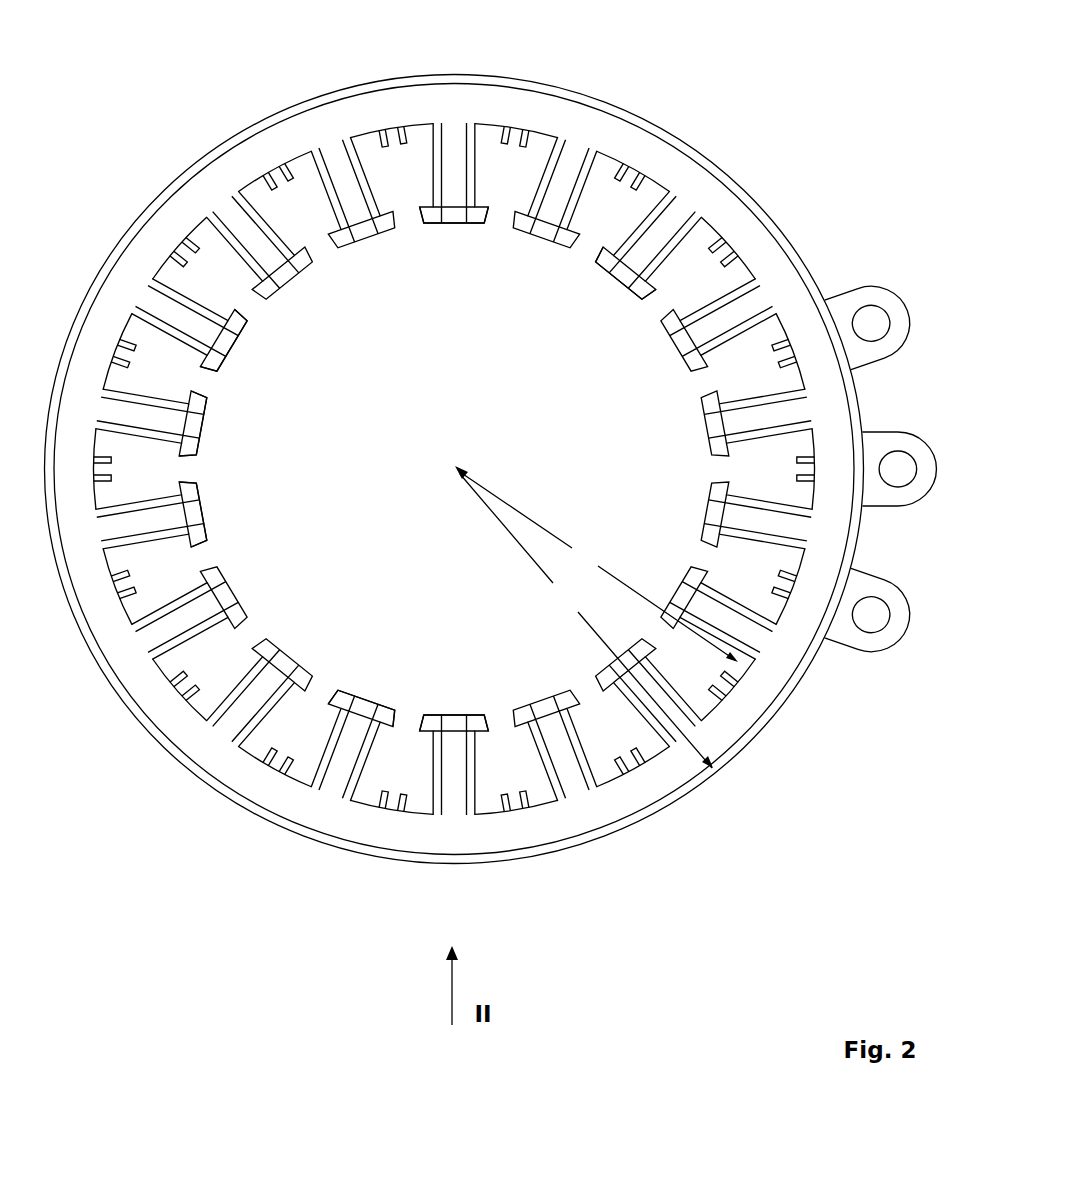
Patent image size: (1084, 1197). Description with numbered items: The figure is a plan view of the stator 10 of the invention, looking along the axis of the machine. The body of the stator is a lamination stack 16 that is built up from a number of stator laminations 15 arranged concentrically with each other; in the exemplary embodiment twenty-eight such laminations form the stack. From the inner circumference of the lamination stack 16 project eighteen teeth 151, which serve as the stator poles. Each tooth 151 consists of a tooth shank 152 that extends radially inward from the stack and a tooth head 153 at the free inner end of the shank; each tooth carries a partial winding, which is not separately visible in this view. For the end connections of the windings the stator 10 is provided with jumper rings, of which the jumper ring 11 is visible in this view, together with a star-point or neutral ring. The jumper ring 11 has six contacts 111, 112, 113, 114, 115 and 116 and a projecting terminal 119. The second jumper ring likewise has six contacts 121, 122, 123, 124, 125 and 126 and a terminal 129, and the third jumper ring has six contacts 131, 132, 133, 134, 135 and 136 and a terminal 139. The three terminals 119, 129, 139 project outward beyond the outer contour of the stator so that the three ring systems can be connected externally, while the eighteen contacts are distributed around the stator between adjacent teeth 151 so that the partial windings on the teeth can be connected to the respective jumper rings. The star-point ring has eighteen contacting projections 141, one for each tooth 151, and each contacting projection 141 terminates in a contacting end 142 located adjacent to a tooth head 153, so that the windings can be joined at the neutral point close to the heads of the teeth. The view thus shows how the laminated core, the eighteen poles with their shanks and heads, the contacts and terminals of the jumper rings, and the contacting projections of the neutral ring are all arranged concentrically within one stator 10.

The stator 10 is at (170, 76).
The jumper ring 11 is at (302, 128).
The stator lamination 15 is at (213, 783).
The lamination stack 16 is at (313, 838).
The contact 111 is at (775, 580).
The contact 112 is at (645, 300).
The contact 113 is at (380, 179).
The contact 114 is at (140, 352).
The contact 115 is at (172, 682).
The contact 116 is at (520, 790).
The contact 121 is at (797, 470).
The contact 122 is at (620, 185).
The contact 123 is at (288, 172).
The contact 124 is at (128, 474).
The contact 125 is at (275, 753).
The contact 126 is at (627, 758).
The contact 131 is at (772, 350).
The contact 132 is at (514, 147).
The contact 133 is at (195, 258).
The contact 134 is at (145, 565).
The contact 135 is at (403, 792).
The contact 136 is at (725, 680).
The terminal 119 is at (872, 590).
The terminal 129 is at (878, 447).
The terminal 139 is at (845, 300).
The contacting projection 141 is at (452, 196).
The contacting end 142 is at (598, 258).
The tooth 151 is at (428, 722).
The tooth shank 152 is at (210, 368).
The tooth head 153 is at (200, 533).